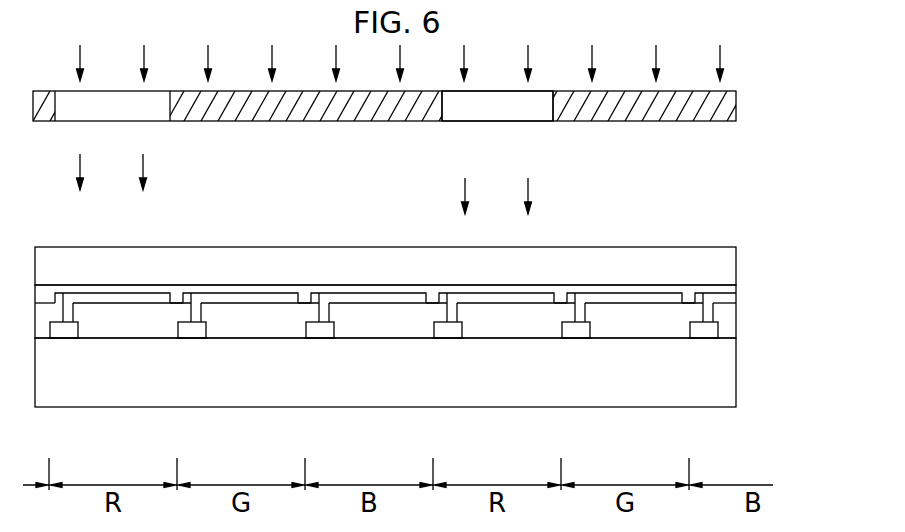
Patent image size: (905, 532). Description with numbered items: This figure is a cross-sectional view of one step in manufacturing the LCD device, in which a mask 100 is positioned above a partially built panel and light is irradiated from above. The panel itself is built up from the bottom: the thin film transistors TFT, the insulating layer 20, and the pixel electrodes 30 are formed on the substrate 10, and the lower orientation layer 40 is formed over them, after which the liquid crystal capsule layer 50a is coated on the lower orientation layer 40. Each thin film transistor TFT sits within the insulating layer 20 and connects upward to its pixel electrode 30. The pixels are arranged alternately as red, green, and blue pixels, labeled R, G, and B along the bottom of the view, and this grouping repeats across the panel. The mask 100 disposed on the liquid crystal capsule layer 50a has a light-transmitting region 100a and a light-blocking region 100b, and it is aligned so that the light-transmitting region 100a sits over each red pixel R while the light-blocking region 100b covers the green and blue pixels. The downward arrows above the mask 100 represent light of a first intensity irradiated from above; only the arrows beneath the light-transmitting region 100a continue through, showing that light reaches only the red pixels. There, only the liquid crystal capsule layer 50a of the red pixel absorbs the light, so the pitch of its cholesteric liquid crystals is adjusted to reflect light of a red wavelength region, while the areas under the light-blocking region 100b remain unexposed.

The mask 100 is at (431, 143).
The light-transmitting region 100a is at (533, 112).
The light-blocking region 100b is at (693, 128).
The liquid crystal capsule layer 50a is at (725, 269).
The insulating layer 20 is at (410, 367).
The substrate 10 is at (725, 377).
The lower orientation layer 40 is at (527, 290).
The pixel electrode 30 is at (623, 300).
The thin film transistor TFT is at (577, 330).